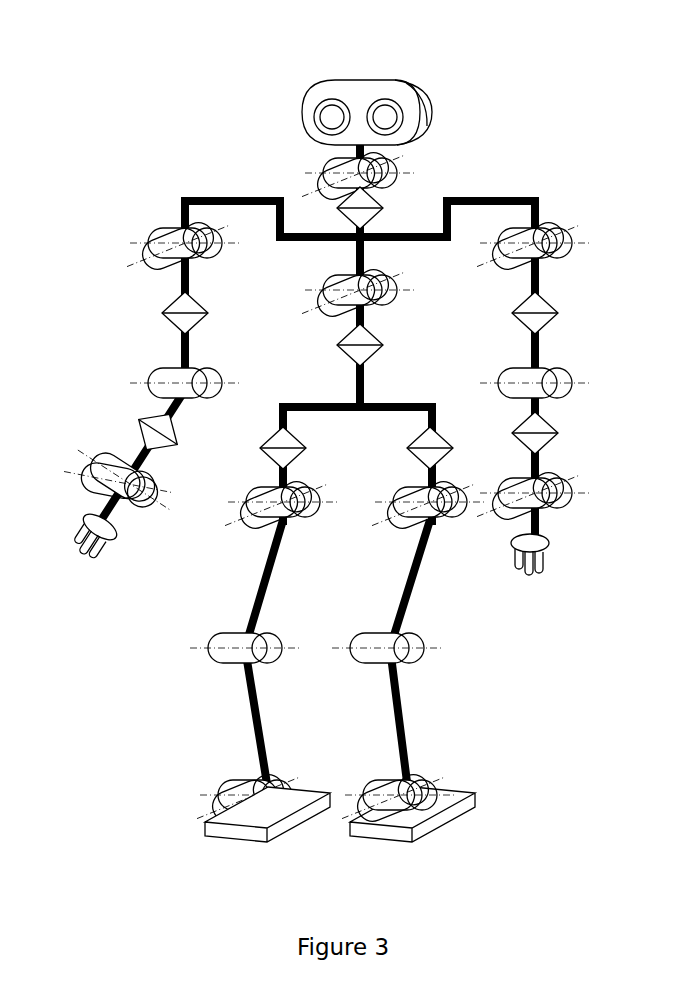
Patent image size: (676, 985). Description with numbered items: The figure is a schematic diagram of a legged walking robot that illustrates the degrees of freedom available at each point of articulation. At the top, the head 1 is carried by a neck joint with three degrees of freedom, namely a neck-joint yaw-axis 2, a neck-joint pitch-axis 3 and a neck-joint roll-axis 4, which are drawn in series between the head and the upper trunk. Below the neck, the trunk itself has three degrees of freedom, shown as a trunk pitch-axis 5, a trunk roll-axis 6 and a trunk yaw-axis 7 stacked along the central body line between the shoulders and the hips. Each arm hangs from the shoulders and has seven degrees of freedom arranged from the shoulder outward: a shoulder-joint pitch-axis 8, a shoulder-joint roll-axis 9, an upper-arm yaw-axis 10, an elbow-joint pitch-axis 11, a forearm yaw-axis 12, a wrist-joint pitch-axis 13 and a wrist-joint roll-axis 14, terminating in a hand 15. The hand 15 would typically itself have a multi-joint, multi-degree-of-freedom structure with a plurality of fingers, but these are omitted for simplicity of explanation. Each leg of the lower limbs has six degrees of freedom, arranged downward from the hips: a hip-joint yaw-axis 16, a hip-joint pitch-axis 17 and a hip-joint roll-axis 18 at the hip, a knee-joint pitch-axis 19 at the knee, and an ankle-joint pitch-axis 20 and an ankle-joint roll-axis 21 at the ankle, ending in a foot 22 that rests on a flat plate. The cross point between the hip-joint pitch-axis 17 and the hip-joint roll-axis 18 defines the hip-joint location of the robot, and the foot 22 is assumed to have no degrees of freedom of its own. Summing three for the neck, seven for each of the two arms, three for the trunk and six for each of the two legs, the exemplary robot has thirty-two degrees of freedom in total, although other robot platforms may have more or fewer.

The head 1 is at (400, 80).
The neck-joint yaw-axis 2 is at (376, 216).
The neck-joint pitch-axis 3 is at (388, 180).
The neck-joint roll-axis 4 is at (372, 150).
The trunk pitch-axis 5 is at (400, 297).
The trunk roll-axis 6 is at (412, 272).
The trunk yaw-axis 7 is at (383, 340).
The shoulder-joint pitch-axis 8 is at (155, 238).
The shoulder-joint roll-axis 9 is at (158, 258).
The upper-arm yaw-axis 10 is at (158, 298).
The elbow-joint pitch-axis 11 is at (162, 376).
The forearm yaw-axis 12 is at (140, 432).
The wrist-joint pitch-axis 13 is at (100, 455).
The wrist-joint roll-axis 14 is at (92, 478).
The hand 15 is at (80, 527).
The hip-joint yaw-axis 16 is at (440, 447).
The hip-joint pitch-axis 17 is at (462, 515).
The hip-joint roll-axis 18 is at (390, 528).
The knee-joint pitch-axis 19 is at (428, 660).
The ankle-joint pitch-axis 20 is at (462, 812).
The ankle-joint roll-axis 21 is at (450, 775).
The foot 22 is at (235, 818).